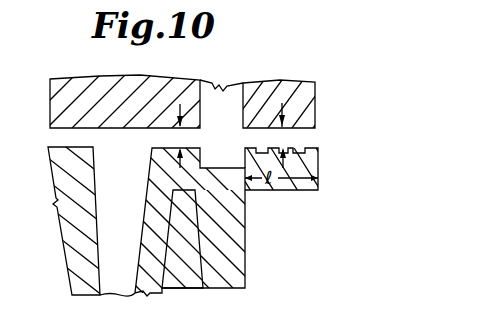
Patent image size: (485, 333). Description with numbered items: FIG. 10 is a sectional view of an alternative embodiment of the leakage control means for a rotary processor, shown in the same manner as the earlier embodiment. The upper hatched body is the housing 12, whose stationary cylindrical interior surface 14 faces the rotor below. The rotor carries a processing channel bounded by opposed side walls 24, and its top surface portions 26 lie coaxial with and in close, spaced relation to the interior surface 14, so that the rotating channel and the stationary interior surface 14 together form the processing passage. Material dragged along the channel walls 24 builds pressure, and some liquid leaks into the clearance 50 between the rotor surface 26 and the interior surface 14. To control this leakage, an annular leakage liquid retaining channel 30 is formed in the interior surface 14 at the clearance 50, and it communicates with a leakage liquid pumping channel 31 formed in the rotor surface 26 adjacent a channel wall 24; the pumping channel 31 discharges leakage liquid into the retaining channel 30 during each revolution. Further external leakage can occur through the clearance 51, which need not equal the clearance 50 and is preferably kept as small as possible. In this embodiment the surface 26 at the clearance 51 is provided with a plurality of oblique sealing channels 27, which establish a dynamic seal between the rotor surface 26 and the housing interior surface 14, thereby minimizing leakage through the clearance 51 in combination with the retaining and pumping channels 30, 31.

The housing 12 is at (91, 87).
The interior surface 14 is at (53, 131).
The side walls 24 is at (140, 216).
The top surface portions 26 is at (53, 146).
The oblique sealing channels 27 is at (257, 147).
The leakage liquid retaining channel 30 is at (228, 95).
The leakage liquid pumping channel 31 is at (227, 161).
The clearance 50 is at (182, 135).
The clearance 51 is at (283, 135).